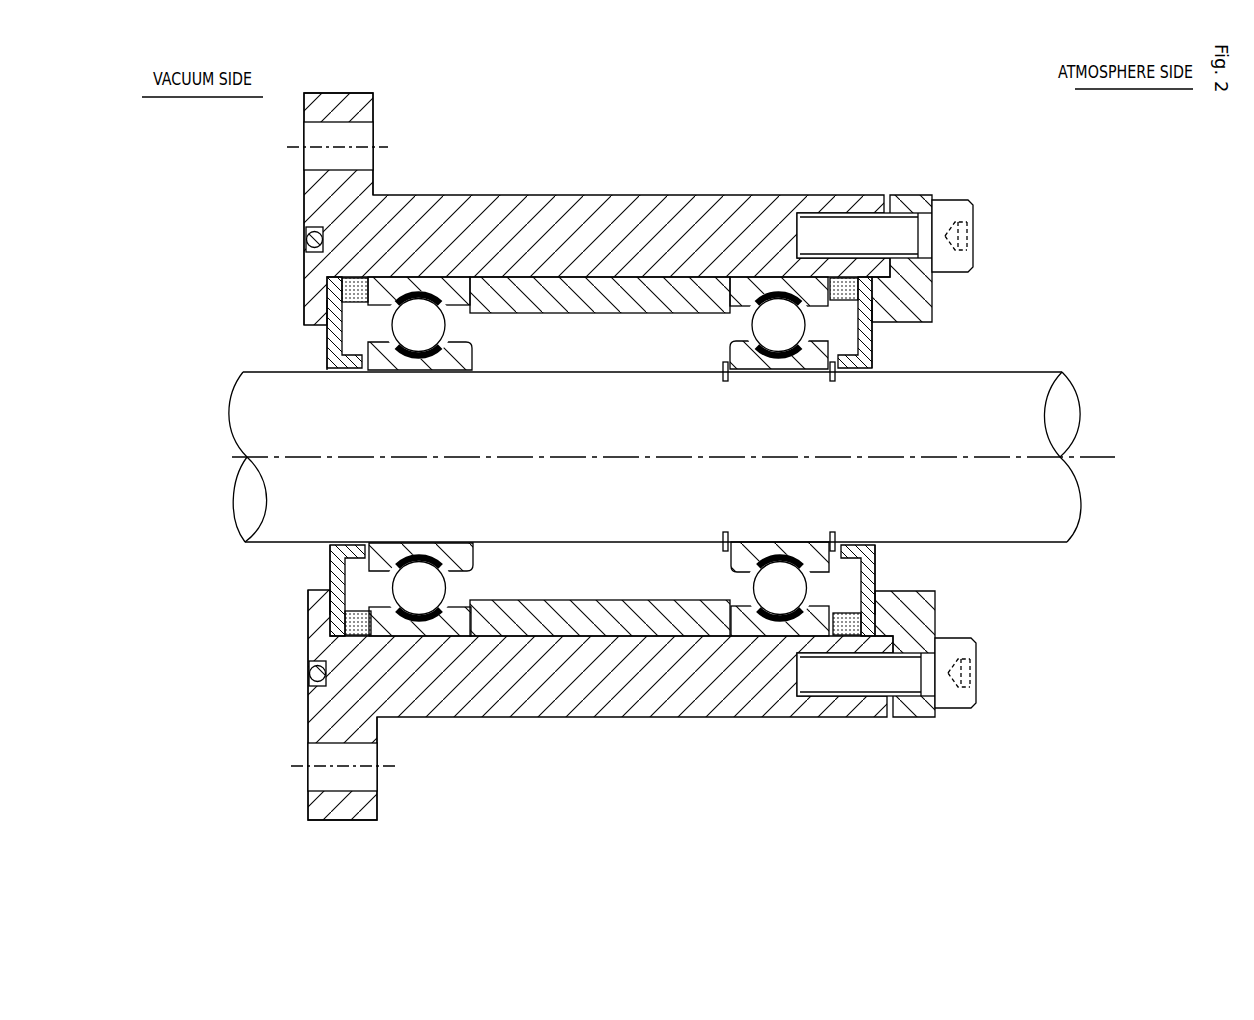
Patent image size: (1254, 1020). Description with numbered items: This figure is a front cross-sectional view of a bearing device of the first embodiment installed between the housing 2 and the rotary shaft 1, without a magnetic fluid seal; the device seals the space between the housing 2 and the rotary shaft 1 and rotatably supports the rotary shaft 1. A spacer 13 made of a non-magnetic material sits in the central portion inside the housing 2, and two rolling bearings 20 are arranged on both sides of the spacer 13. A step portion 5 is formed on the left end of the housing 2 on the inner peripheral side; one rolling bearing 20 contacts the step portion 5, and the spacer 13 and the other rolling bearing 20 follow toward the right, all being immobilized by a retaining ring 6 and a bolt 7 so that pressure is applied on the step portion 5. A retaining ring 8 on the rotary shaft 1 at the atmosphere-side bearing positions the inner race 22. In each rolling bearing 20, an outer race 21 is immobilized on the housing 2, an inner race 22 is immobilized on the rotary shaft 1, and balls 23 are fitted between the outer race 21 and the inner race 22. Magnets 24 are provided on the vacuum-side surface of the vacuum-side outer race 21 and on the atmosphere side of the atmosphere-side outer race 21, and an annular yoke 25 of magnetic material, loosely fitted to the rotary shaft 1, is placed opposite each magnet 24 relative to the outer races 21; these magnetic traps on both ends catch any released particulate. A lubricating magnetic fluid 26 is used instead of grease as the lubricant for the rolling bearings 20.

The rotary shaft 1 is at (623, 508).
The housing 2 is at (538, 195).
The step portion 5 is at (317, 309).
The retaining ring 6 is at (918, 195).
The bolt 7 is at (970, 202).
The retaining ring 8 is at (730, 535).
The spacer 13 is at (657, 287).
The rolling bearing 20 is at (588, 347).
The outer race 21 is at (370, 362).
The inner race 22 is at (450, 345).
The balls 23 is at (412, 340).
The magnet 24 is at (355, 283).
The annular yoke 25 is at (327, 342).
The lubricating magnetic fluid 26 is at (460, 560).